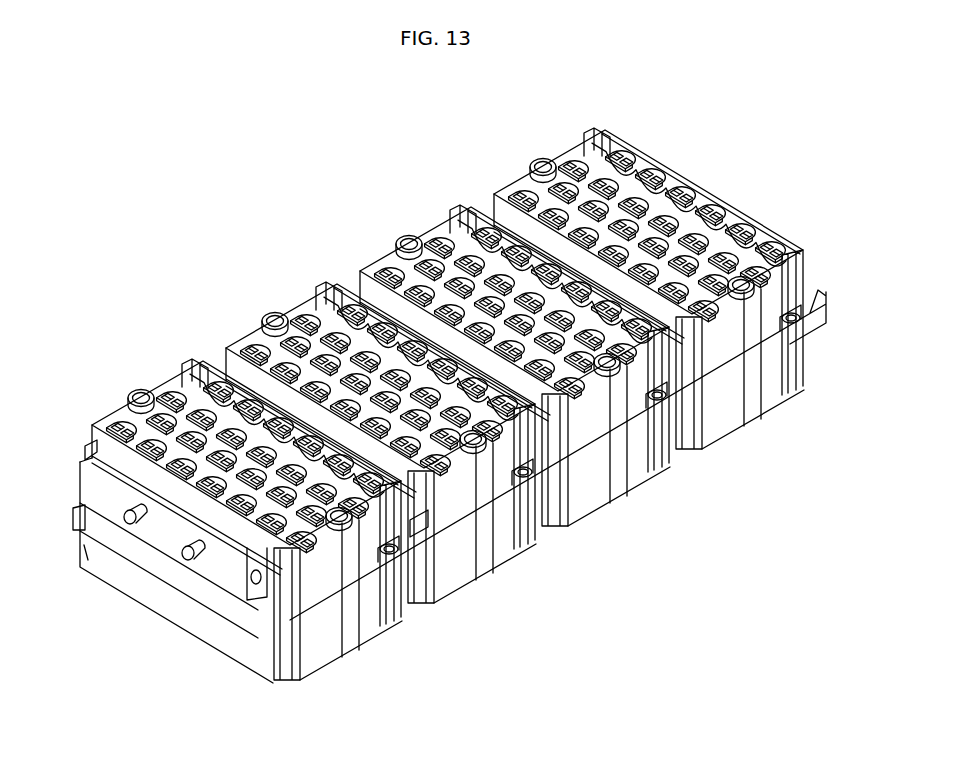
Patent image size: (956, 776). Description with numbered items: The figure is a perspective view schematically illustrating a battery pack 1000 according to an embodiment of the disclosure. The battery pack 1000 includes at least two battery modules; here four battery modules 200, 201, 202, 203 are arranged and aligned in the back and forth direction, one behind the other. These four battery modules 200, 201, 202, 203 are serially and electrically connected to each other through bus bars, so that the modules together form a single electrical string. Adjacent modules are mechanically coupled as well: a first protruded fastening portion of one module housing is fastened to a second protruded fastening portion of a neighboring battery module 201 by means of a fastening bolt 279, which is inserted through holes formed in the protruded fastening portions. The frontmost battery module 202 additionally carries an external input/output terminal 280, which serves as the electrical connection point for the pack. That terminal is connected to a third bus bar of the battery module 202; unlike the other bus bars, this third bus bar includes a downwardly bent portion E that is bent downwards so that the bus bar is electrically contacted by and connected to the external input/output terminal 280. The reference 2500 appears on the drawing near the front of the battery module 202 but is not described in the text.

The battery pack 1000 is at (224, 90).
The battery module 200 is at (258, 306).
The battery module 201 is at (393, 232).
The battery module 202 is at (123, 384).
The battery module 203 is at (526, 156).
The module housing 2500 is at (130, 470).
The external input/output terminal 280 is at (186, 552).
The downwardly bent portion E is at (223, 560).
The fastening bolt 279 is at (420, 521).